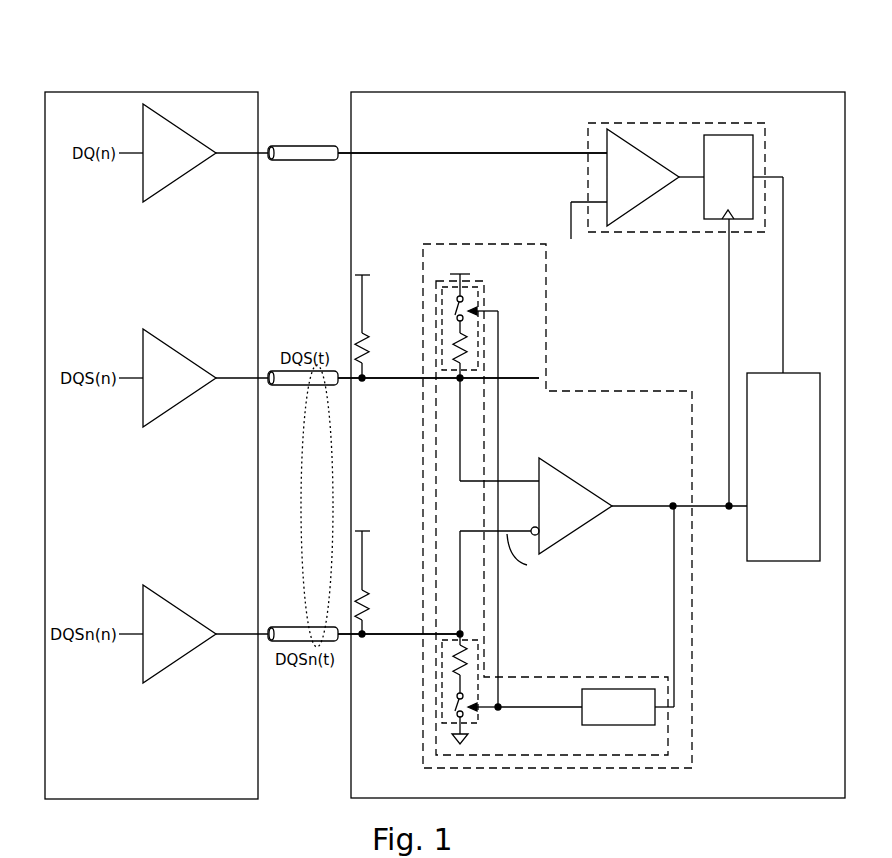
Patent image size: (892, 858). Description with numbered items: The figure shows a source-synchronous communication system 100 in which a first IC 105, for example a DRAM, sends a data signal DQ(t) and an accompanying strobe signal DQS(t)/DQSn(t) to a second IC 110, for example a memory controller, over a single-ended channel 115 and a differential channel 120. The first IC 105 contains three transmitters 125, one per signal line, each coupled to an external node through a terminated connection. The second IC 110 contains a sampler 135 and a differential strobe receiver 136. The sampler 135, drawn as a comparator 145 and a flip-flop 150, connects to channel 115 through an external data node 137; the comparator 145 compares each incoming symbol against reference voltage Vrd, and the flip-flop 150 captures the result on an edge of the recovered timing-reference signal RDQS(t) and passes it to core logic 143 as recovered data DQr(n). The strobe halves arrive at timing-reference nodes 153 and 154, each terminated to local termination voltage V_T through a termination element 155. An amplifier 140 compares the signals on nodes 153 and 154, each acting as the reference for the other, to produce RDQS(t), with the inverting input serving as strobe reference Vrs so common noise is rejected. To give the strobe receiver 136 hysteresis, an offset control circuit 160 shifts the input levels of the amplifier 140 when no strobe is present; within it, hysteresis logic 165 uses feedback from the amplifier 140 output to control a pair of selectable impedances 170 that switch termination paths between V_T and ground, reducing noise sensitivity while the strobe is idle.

The source-synchronous communication system 100 is at (641, 50).
The first IC 105 is at (228, 794).
The second IC 110 is at (705, 794).
The single-ended channel 115 is at (319, 161).
The differential channel 120 is at (302, 463).
The communication circuit (transmitter) 125 is at (178, 176).
The sampler 135 is at (692, 151).
The differential strobe receiver 136 is at (638, 436).
The external data node 137 is at (355, 156).
The amplifier 140 is at (575, 525).
The core logic 143 is at (797, 501).
The comparator 145 is at (643, 198).
The flip-flop 150 is at (742, 198).
The timing-reference node 153 is at (355, 381).
The timing-reference node 154 is at (355, 637).
The termination element 155 is at (379, 446).
The offset control circuit 160 is at (668, 753).
The hysteresis logic 165 is at (650, 717).
The selectable impedance 170 is at (480, 297).